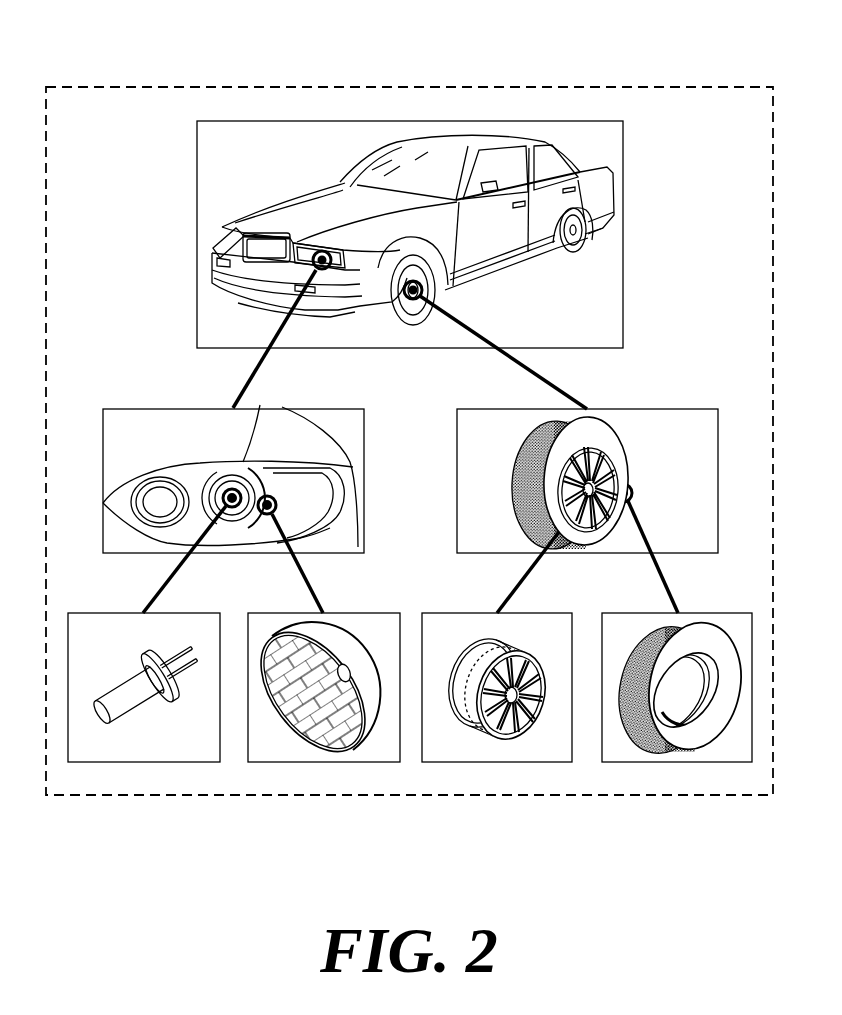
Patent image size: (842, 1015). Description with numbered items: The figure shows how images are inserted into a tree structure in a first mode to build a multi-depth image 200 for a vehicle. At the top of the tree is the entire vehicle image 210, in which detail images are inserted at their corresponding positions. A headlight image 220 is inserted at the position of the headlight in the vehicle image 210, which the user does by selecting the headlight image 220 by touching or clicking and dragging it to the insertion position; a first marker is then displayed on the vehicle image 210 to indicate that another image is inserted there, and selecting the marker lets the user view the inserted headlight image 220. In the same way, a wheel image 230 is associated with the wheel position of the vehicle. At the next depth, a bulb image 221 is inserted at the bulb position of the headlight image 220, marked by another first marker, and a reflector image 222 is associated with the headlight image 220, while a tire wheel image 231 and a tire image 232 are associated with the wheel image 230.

The multi-depth image 200 is at (156, 53).
The entire vehicle image 210 is at (623, 171).
The headlight image 220 is at (168, 409).
The wheel image 230 is at (640, 409).
The bulb image 221 is at (90, 613).
The reflector image 222 is at (365, 613).
The wheel rim 231 is at (450, 613).
The tire image 232 is at (722, 613).